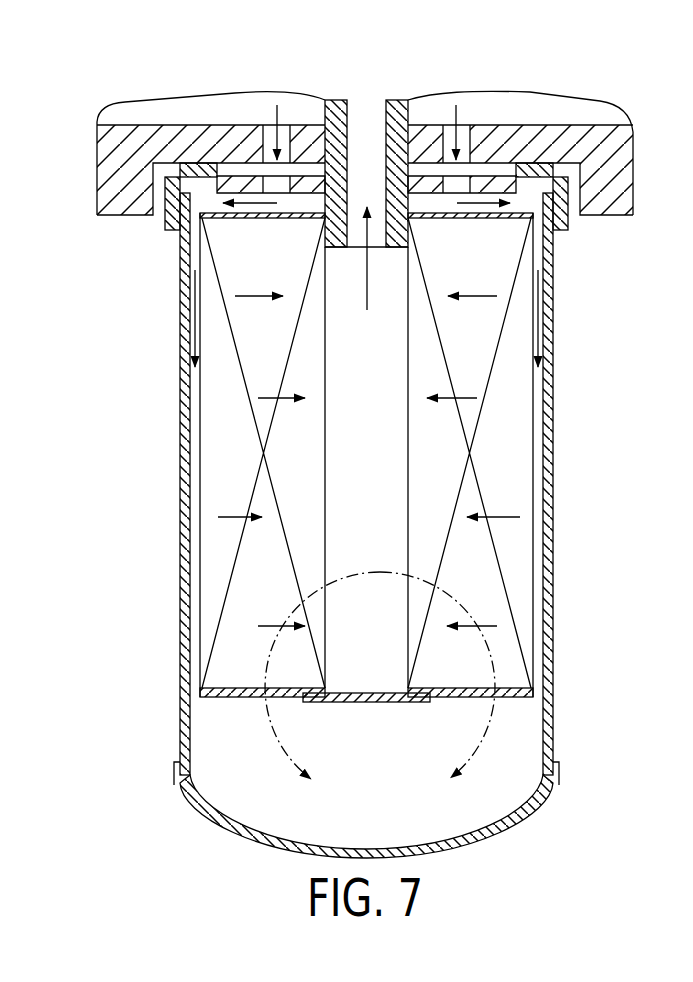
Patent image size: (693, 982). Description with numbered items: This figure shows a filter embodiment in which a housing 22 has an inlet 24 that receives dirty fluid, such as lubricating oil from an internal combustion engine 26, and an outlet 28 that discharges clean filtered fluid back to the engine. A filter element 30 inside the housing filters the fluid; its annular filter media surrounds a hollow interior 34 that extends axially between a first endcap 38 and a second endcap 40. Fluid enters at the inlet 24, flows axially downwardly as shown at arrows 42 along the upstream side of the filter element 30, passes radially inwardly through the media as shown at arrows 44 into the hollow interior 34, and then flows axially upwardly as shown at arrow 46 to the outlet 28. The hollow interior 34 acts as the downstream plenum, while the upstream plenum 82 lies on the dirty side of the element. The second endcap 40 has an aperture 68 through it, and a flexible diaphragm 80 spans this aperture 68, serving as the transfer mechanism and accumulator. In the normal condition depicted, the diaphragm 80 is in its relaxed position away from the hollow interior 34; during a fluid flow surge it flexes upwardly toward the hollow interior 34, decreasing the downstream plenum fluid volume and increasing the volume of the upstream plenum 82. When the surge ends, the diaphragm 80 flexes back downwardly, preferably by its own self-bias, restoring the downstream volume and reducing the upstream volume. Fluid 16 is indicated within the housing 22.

The fluid flow 16 is at (380, 688).
The housing 22 is at (181, 317).
The inlet 24 is at (465, 137).
The internal combustion engine 26 is at (612, 118).
The outlet 28 is at (366, 118).
The filter element 30 is at (201, 400).
The hollow interior 34 is at (381, 486).
The first endcap 38 is at (285, 220).
The second endcap 40 is at (223, 688).
The upstream flow path 42 is at (541, 302).
The radially inward flow 44 is at (487, 300).
The downstream flow path 46 is at (365, 253).
The aperture 68 is at (437, 688).
The flexible diaphragm 80 is at (390, 692).
The upstream plenum 82 is at (207, 720).